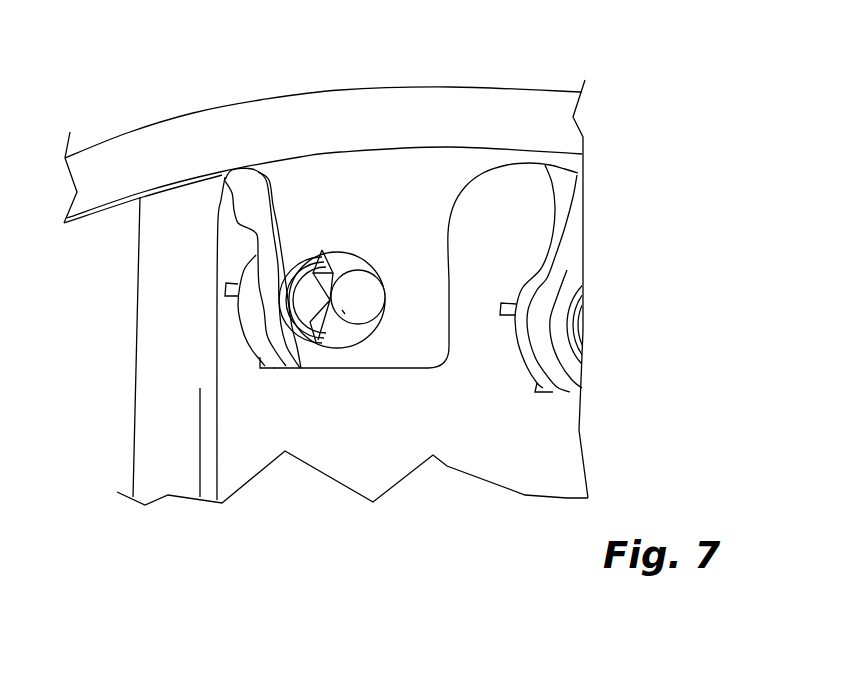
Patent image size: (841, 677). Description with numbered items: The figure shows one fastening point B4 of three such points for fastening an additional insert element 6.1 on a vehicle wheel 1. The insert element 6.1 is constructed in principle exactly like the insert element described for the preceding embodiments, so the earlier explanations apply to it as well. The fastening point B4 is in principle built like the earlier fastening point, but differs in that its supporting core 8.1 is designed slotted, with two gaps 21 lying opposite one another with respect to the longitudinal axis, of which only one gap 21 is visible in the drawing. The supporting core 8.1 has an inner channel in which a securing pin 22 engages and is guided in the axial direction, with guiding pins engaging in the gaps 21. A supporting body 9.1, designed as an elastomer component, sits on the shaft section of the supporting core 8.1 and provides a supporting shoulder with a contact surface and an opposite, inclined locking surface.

The vehicle wheel 1 is at (182, 105).
The fastening point B4 is at (368, 240).
The insert element 6.1 is at (400, 437).
The supporting body 9.1 is at (249, 315).
The supporting core 8.1 is at (334, 249).
The gap 21 is at (320, 263).
The securing pin 22 is at (378, 276).